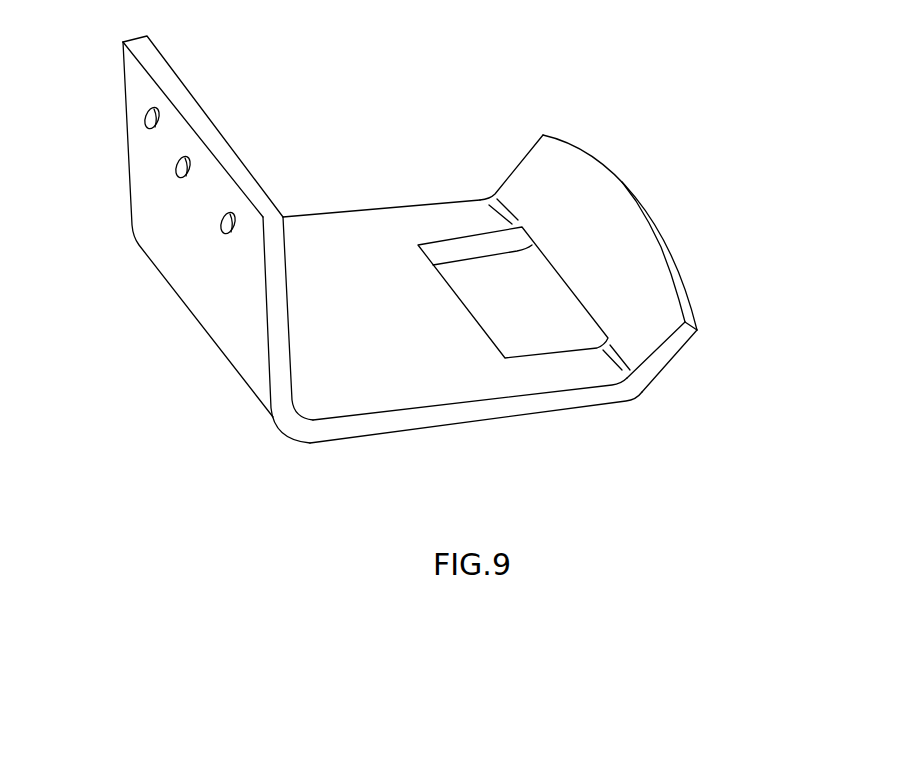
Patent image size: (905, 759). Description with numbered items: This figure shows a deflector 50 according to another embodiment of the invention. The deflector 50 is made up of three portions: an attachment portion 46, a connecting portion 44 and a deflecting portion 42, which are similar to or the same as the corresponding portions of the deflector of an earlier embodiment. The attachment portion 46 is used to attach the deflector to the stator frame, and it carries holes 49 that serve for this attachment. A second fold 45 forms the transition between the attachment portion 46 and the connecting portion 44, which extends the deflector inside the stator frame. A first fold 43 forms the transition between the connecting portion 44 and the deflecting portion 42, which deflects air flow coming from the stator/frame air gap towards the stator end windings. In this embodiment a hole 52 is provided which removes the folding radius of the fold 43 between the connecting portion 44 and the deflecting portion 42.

The deflecting portion 42 is at (673, 343).
The first fold 43 is at (628, 387).
The connecting portion 44 is at (488, 410).
The second fold 45 is at (297, 427).
The attachment portion 46 is at (202, 268).
The holes 49 is at (180, 168).
The deflector 50 is at (371, 145).
The hole 52 is at (495, 282).